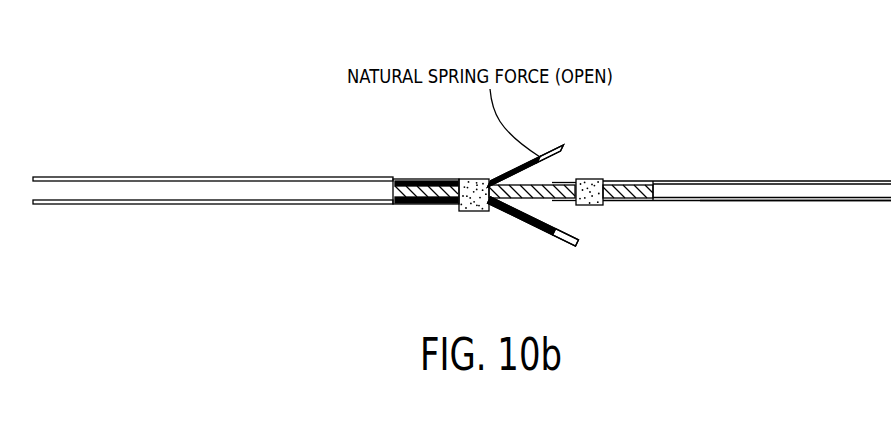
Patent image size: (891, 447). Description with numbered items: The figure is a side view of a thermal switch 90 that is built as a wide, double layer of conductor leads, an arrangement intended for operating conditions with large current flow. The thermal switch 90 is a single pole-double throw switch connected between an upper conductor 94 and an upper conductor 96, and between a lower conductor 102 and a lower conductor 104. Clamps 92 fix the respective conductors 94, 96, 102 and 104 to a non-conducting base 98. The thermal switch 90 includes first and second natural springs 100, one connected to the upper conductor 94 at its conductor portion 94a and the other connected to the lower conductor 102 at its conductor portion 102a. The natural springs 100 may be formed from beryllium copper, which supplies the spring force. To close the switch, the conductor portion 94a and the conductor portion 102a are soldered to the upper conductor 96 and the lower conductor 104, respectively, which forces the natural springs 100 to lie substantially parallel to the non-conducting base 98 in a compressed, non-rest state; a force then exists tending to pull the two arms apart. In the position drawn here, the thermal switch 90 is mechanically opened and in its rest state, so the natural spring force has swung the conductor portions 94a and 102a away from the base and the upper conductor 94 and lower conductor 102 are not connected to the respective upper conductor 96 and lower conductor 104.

The thermal switch 90 is at (756, 72).
The clamps 92 is at (475, 212).
The upper conductor 94 is at (135, 177).
The conductor portion 94a is at (550, 150).
The upper conductor 96 is at (626, 182).
The non-conducting base 98 is at (554, 183).
The natural spring 100 is at (543, 214).
The lower conductor 102 is at (185, 205).
The conductor portion 102a is at (550, 236).
The lower conductor 104 is at (818, 201).